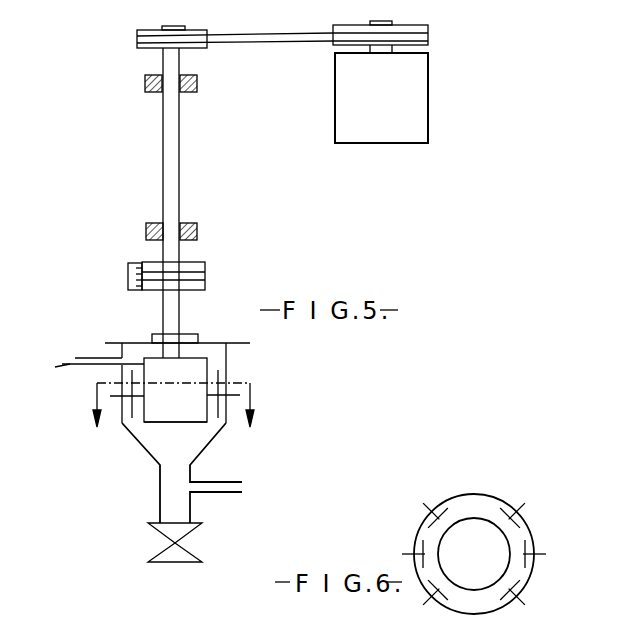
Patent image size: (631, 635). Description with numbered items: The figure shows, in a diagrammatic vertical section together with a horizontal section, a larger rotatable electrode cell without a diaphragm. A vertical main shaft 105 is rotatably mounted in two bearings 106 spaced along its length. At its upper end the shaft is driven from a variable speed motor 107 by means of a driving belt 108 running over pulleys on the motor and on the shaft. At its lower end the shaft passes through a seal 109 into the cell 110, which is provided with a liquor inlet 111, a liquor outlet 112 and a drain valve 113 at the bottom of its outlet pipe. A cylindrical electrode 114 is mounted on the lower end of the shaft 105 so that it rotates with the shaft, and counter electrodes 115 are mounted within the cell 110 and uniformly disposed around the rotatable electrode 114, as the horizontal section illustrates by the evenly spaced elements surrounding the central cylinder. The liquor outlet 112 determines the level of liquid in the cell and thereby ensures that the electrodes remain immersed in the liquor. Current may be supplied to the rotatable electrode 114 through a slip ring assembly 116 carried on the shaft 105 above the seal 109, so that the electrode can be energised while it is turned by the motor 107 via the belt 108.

In FIG. 5, the main shaft 105 is at (172, 163).
In FIG. 5, the bearings 106 is at (147, 83).
In FIG. 5, the variable speed motor 107 is at (352, 114).
In FIG. 5, the driving belt 108 is at (137, 40).
In FIG. 5, the seal 109 is at (160, 333).
In FIG. 5, the cell 110 is at (131, 442).
In FIG. 6, the cell 110 is at (533, 588).
In FIG. 5, the liquor inlet 111 is at (242, 487).
In FIG. 5, the liquor outlet 112 is at (82, 366).
In FIG. 5, the drain valve 113 is at (165, 545).
In FIG. 5, the cylindrical electrode 114 is at (152, 421).
In FIG. 6, the cylindrical electrode 114 is at (495, 548).
In FIG. 5, the counter electrodes 115 is at (218, 401).
In FIG. 5, the slip ring assembly 116 is at (128, 278).